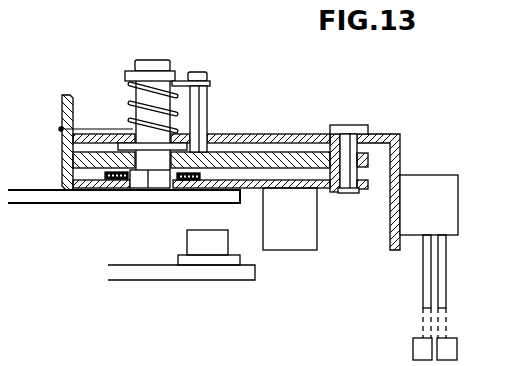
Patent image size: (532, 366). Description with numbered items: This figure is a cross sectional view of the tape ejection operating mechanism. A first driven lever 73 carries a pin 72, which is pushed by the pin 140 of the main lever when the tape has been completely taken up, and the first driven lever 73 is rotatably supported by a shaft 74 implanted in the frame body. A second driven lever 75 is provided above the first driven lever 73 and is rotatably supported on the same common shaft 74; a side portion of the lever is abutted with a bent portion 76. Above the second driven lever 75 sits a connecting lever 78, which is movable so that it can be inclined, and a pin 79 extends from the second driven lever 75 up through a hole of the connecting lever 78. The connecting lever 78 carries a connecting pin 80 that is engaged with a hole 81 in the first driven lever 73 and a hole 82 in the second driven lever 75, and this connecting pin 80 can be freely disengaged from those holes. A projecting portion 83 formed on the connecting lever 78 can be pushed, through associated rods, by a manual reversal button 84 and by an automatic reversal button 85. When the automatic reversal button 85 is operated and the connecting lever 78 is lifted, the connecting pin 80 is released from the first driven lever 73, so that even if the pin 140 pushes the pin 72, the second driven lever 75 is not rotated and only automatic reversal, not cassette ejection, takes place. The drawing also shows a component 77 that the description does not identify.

The pin 72 is at (301, 250).
The first driven lever 73 is at (303, 189).
The shaft 74 is at (158, 62).
The second driven lever 75 is at (283, 163).
The bent portion 76 is at (62, 106).
The coil spring 77 is at (133, 88).
The connecting lever 78 is at (251, 134).
The pin 79 is at (209, 103).
The connecting pin 80 is at (347, 148).
The hole 81 is at (343, 193).
The hole 82 is at (314, 153).
The projecting portion 83 is at (447, 213).
The manual reversal button 84 is at (421, 338).
The automatic reversal button 85 is at (456, 338).
The pin 140 is at (200, 244).